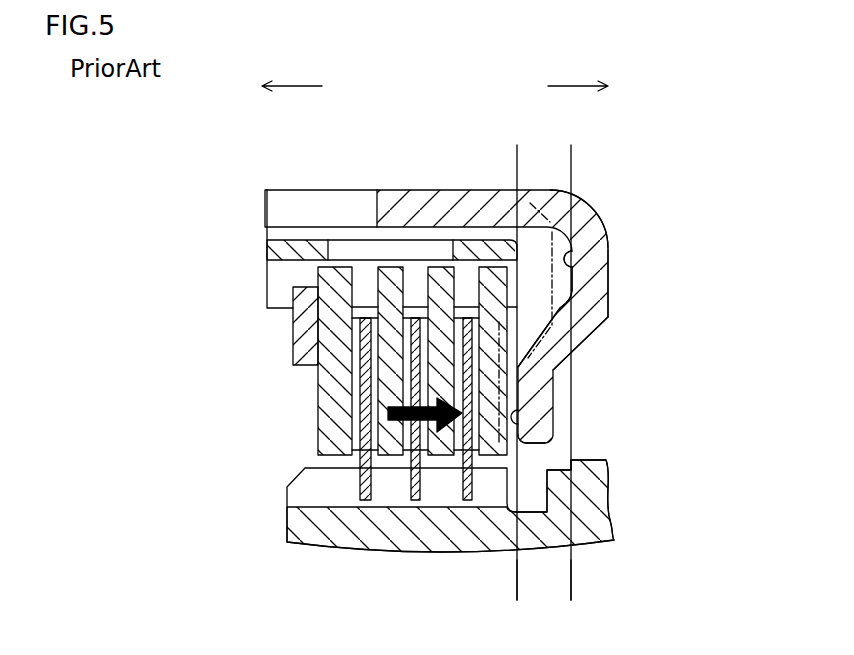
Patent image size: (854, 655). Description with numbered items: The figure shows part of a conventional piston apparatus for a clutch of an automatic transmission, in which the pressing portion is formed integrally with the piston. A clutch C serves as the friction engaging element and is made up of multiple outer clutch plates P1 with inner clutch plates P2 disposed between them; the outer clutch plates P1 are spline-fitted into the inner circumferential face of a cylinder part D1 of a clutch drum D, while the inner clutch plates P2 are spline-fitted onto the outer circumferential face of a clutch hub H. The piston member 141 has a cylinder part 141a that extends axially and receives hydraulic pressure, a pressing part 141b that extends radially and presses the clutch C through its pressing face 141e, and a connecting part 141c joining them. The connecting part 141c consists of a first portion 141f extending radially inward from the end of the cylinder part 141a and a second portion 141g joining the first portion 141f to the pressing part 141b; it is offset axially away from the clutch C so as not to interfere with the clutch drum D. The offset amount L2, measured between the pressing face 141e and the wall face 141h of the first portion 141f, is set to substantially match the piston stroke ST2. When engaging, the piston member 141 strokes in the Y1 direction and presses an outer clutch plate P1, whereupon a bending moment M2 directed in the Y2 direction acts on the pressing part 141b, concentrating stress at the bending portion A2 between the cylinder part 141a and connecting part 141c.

The piston member 141 is at (399, 277).
The cylinder part 141a is at (492, 275).
The pressing part 141b is at (616, 359).
The connecting part 141c is at (675, 280).
The pressing face 141e is at (598, 426).
The first portion 141f is at (657, 276).
The second portion 141g is at (632, 328).
The wall face 141h is at (655, 239).
The clutch drum D is at (342, 264).
The cylinder part D1 is at (299, 187).
The clutch C is at (363, 350).
The outer clutch plates P1 is at (428, 228).
The inner clutch plates P2 is at (416, 475).
The load M2 is at (348, 416).
The clutch hub H is at (450, 546).
The piston stroke ST2 is at (544, 358).
The offset amount L2 is at (544, 590).
The bending portion A2 is at (618, 205).
The Y1 direction Y1 is at (271, 83).
The Y2 direction Y2 is at (593, 83).